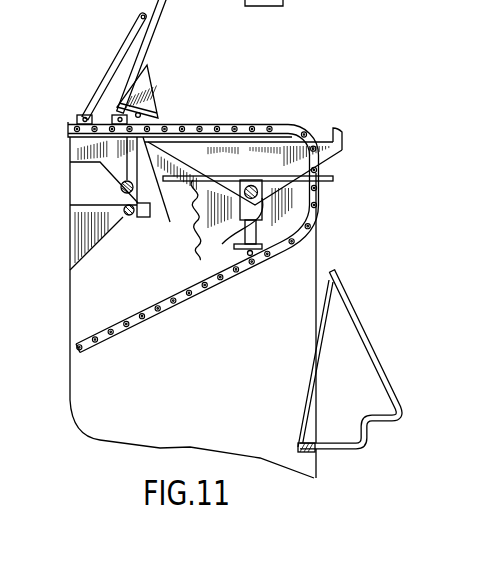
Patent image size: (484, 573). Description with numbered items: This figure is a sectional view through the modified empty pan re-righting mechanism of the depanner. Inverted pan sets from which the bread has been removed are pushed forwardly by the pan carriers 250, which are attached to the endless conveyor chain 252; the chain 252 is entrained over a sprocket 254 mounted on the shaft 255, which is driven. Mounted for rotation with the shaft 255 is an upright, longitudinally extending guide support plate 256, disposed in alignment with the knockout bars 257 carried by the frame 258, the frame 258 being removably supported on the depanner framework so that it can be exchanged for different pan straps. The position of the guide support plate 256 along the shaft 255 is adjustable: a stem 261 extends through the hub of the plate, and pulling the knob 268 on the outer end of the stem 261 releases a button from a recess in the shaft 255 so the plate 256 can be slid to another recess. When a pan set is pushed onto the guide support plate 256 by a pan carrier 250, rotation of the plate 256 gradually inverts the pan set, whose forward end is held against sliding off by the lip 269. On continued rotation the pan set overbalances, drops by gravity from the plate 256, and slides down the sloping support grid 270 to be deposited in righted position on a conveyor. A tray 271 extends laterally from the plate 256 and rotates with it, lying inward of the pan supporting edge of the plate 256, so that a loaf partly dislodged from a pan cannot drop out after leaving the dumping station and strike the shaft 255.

The pan carrier 250 is at (157, 22).
The endless conveyor chain 252 is at (153, 313).
The sprocket 254 is at (318, 204).
The shaft 255 is at (270, 246).
The guide support plate 256 is at (345, 150).
The knockout bar 257 is at (134, 192).
The frame 258 is at (131, 214).
The stem 261 is at (222, 245).
The knob 268 is at (248, 258).
The lip 269 is at (345, 133).
The sloping support grid 270 is at (374, 362).
The tray 271 is at (212, 177).